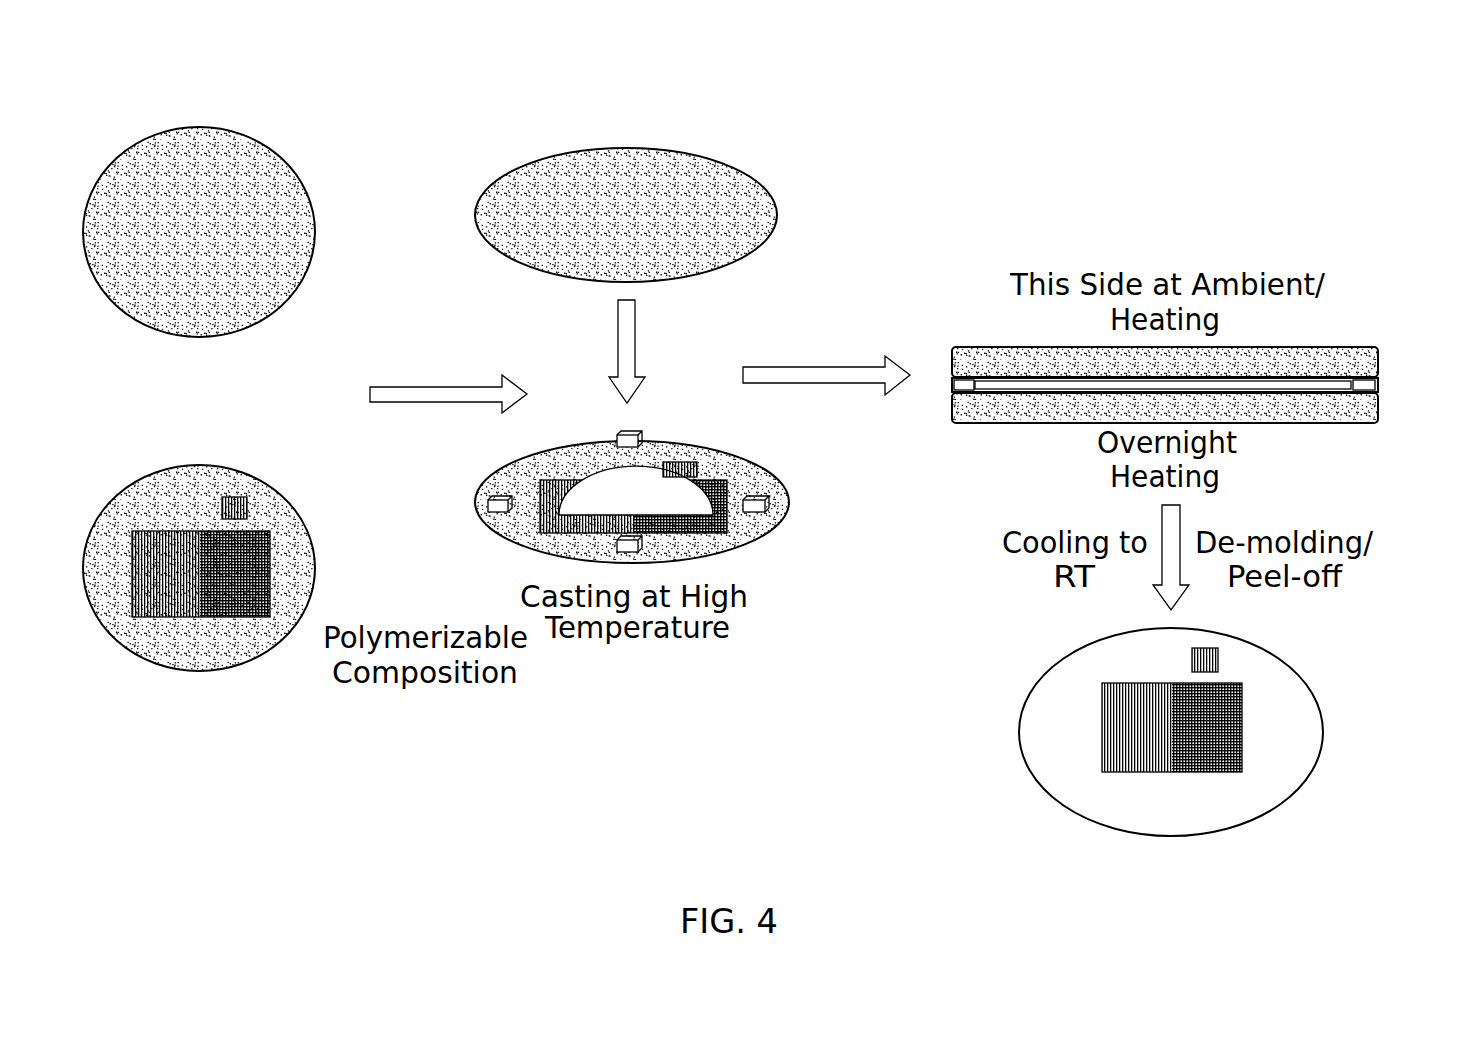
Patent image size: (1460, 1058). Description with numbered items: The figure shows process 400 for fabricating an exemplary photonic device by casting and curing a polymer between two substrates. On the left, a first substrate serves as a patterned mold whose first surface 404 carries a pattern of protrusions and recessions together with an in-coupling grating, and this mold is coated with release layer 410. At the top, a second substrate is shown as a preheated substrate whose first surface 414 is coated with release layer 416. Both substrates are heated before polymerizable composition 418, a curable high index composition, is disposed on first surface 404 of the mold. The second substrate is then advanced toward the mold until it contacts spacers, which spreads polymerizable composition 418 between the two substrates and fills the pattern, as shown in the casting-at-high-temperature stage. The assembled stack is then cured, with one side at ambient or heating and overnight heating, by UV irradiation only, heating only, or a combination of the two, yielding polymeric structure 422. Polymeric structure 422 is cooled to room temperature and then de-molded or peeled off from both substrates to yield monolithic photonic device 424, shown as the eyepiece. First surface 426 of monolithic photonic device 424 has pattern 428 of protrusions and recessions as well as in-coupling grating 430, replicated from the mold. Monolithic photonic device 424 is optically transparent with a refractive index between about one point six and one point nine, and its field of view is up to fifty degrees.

The process 400 is at (814, 54).
The first surface 404 is at (313, 207).
The release layer 410 is at (230, 263).
The first surface 414 is at (770, 197).
The release layer 416 is at (540, 230).
The polymerizable composition 418 is at (474, 608).
The polymeric structure 422 is at (1002, 390).
The monolithic photonic device 424 is at (1007, 688).
The first surface 426 is at (1219, 812).
The pattern 428 is at (1123, 770).
The in-coupling grating 430 is at (1207, 650).